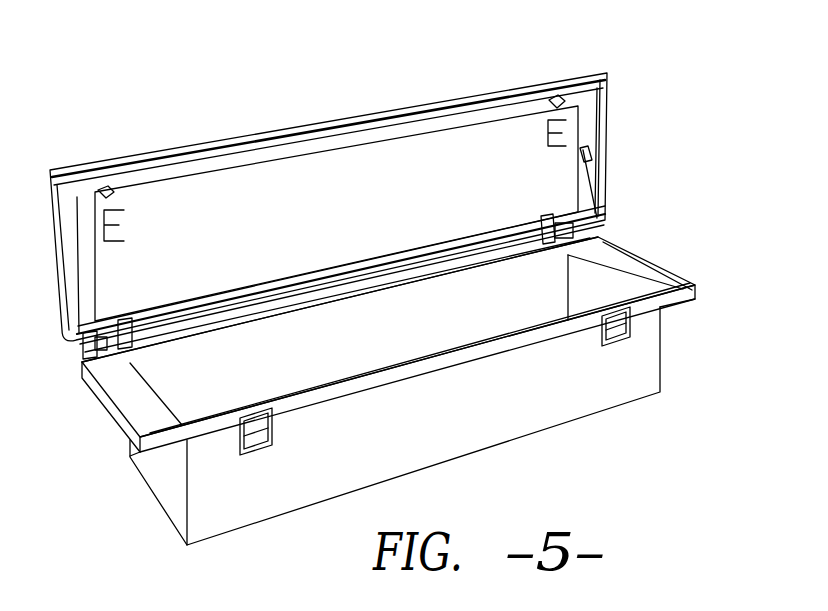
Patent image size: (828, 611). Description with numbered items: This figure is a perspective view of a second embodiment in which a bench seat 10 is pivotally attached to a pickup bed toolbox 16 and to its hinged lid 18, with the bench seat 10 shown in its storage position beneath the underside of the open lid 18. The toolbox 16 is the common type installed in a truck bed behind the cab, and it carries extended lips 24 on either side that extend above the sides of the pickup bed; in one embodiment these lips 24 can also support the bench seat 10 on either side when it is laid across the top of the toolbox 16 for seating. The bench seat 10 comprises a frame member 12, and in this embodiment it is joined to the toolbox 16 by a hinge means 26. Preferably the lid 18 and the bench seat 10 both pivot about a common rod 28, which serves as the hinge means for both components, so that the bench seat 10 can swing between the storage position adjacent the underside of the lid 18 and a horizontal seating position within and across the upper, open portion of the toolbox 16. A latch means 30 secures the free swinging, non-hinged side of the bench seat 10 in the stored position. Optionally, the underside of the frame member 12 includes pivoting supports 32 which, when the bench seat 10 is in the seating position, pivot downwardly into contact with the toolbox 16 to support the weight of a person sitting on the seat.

The bench seat 10 is at (386, 285).
The frame member 12 is at (355, 183).
The toolbox 16 is at (401, 385).
The hinged lid 18 is at (337, 142).
The extended lips 24 is at (648, 286).
The hinge means 26 is at (550, 217).
The common rod 28 is at (440, 268).
The latch means 30 is at (113, 188).
The pivoting supports 32 is at (123, 222).